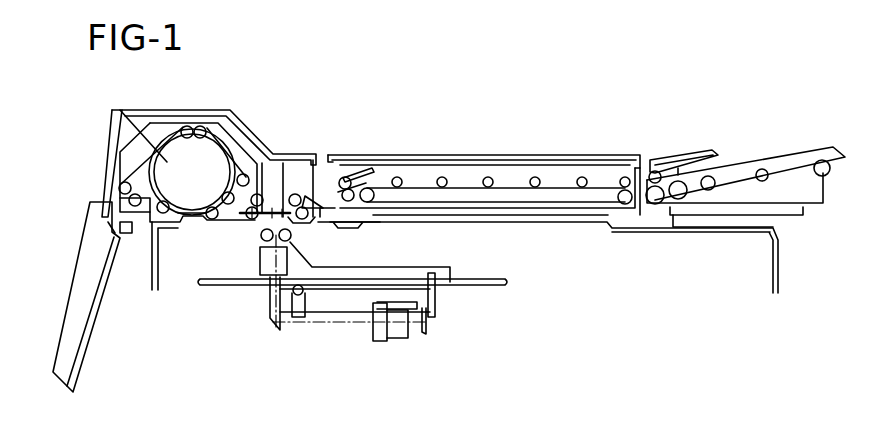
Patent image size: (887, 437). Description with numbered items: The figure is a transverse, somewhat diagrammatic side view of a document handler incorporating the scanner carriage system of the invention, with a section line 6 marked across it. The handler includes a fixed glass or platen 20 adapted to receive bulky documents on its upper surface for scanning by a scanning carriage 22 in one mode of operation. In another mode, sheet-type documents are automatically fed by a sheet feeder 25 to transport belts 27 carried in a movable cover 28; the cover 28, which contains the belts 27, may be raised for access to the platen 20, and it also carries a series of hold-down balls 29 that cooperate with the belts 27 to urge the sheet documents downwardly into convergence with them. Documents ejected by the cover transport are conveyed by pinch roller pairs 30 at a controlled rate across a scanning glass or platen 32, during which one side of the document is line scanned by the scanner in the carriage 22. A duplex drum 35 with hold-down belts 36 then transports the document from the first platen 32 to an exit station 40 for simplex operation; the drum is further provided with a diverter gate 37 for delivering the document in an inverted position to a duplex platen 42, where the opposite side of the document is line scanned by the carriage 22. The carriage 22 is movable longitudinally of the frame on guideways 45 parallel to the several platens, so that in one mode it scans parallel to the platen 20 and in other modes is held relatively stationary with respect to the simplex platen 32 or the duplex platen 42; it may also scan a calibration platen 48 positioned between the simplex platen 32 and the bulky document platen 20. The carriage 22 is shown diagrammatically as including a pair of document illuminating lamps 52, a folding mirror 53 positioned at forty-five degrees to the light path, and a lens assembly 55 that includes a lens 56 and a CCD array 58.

The section line 6- 6 is at (185, 357).
The fixed glass or platen 20 is at (533, 218).
The scanning carriage 22 is at (450, 308).
The sheet feeder 25 is at (740, 166).
The transport belts 27 is at (530, 188).
The movable cover 28 is at (468, 162).
The hold-down balls 29 is at (441, 177).
The pinch roller pairs 30 is at (253, 205).
The scanning glass or platen 32 is at (288, 210).
The duplex drum 35 is at (120, 110).
The hold-down belts 36 is at (173, 132).
The diverter gate 37 is at (147, 213).
The exit station 40 is at (150, 195).
The duplex platen 42 is at (188, 215).
The guideways 45 is at (507, 289).
The calibration platen 48 is at (370, 257).
The document illuminating lamps 52 is at (266, 239).
The folding mirror 53 is at (272, 332).
The lens assembly 55 is at (385, 342).
The lens 56 is at (405, 340).
The CCD array 58 is at (424, 332).